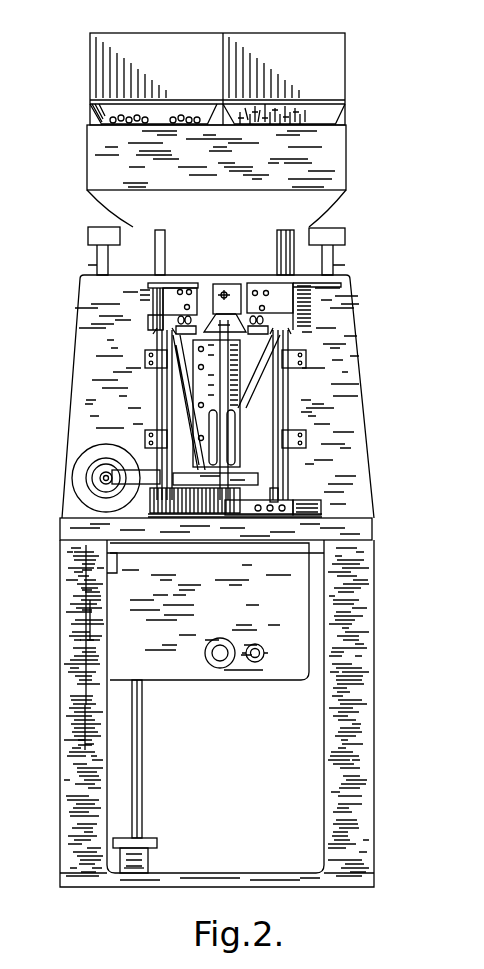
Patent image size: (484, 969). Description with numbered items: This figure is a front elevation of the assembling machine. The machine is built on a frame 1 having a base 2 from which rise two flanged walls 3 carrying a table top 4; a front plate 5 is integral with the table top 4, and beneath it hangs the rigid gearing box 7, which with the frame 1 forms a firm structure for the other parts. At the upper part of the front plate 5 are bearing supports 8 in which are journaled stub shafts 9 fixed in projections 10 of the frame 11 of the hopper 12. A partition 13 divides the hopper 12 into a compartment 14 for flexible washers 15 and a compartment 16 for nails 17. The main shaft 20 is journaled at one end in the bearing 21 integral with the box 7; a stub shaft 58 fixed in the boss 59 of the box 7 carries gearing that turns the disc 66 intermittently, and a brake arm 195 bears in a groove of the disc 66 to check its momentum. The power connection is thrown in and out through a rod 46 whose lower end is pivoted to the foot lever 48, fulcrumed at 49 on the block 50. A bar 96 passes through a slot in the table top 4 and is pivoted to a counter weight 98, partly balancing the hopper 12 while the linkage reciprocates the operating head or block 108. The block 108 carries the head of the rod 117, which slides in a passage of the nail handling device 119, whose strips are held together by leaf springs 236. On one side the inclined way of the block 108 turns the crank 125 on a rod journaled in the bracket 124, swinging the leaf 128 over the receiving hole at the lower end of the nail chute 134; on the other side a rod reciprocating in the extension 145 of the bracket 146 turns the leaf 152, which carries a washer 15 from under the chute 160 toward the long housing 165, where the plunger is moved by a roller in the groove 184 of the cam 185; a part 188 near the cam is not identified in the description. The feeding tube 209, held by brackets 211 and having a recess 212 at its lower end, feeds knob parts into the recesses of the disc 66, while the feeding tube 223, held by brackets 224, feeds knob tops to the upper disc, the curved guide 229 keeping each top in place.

The frame 1 is at (78, 418).
The base 2 is at (198, 872).
The flanged walls 3 is at (360, 644).
The table top 4 is at (68, 530).
The front plate 5 is at (100, 368).
The gearing box 7 is at (22, 634).
The bearing supports 8 is at (96, 254).
The stub shafts 9 is at (86, 240).
The projections 10 is at (137, 249).
The frame 11 is at (222, 202).
The hopper 12 is at (92, 163).
The partition 13 is at (228, 57).
The compartment 14 is at (147, 67).
The flexible washers 15 is at (150, 118).
The compartment 16 is at (273, 67).
The nails 17 is at (300, 116).
The shaft 20 is at (220, 660).
The bearing 21 is at (256, 662).
The rod 46 is at (141, 782).
The foot lever 48 is at (146, 838).
The fulcrum 49 is at (148, 848).
The block 50 is at (127, 868).
The stub shaft 58 is at (270, 663).
The boss 59 is at (288, 660).
The disc 66 is at (300, 500).
The bar 96 is at (68, 570).
The counter weight 98 is at (70, 707).
The block 108 is at (225, 284).
The rod 117 is at (96, 376).
The nail handling device 119 is at (162, 424).
The bracket 124 is at (290, 308).
The crank 125 is at (290, 324).
The leaf 128 is at (320, 282).
The nail chute 134 is at (278, 258).
The extension 145 is at (156, 345).
The bracket 146 is at (160, 306).
The leaf 152 is at (148, 296).
The chute 160 is at (164, 234).
The long housing 165 is at (215, 479).
The groove 184 is at (92, 492).
The cam 185 is at (74, 478).
The wheel arm 188 is at (112, 482).
The brake arm 195 is at (320, 500).
The feeding tube 209 is at (286, 388).
The brackets 211 is at (306, 362).
The recess 212 is at (290, 480).
The feeding tube 223 is at (192, 400).
The brackets 224 is at (150, 372).
The curved guide 229 is at (235, 502).
The leaf springs 236 is at (204, 386).